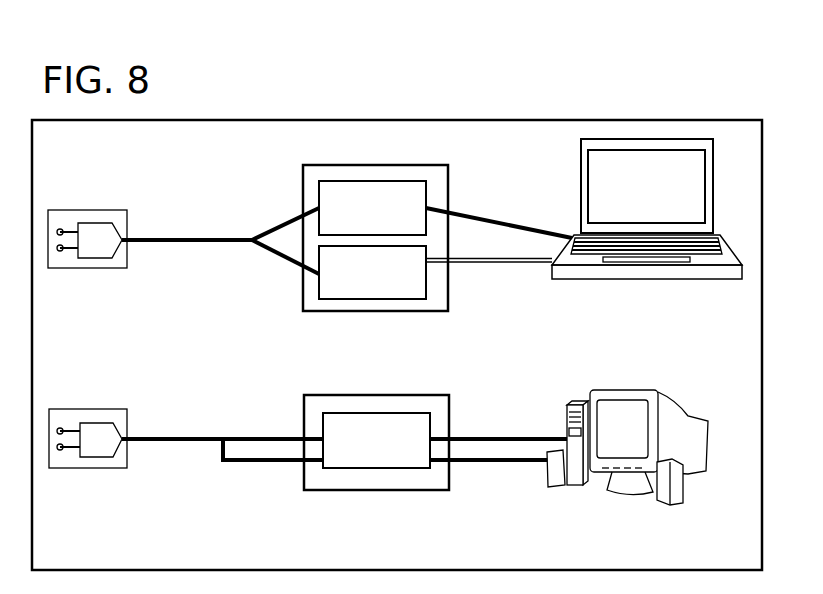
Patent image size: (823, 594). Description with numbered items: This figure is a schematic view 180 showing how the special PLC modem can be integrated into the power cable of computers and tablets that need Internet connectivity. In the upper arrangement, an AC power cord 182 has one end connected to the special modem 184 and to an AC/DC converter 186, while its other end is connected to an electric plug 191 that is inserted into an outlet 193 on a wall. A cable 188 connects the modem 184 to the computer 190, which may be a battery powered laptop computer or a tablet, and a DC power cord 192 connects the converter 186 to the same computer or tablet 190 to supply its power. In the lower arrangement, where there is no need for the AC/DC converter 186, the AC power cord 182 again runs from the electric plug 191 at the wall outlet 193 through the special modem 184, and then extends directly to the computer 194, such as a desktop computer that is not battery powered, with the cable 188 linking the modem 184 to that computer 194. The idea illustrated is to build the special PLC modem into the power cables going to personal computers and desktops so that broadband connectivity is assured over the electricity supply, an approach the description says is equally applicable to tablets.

The schematic view 180 is at (200, 107).
The AC power cord 182 is at (155, 245).
The special modem 184 is at (337, 181).
The AC/DC converter 186 is at (319, 283).
The cable 188 is at (460, 212).
The computer 190 is at (645, 279).
The electric plug 191 is at (98, 223).
The DC power cord 192 is at (538, 264).
The outlet 193 is at (70, 217).
The computer 194 is at (673, 395).